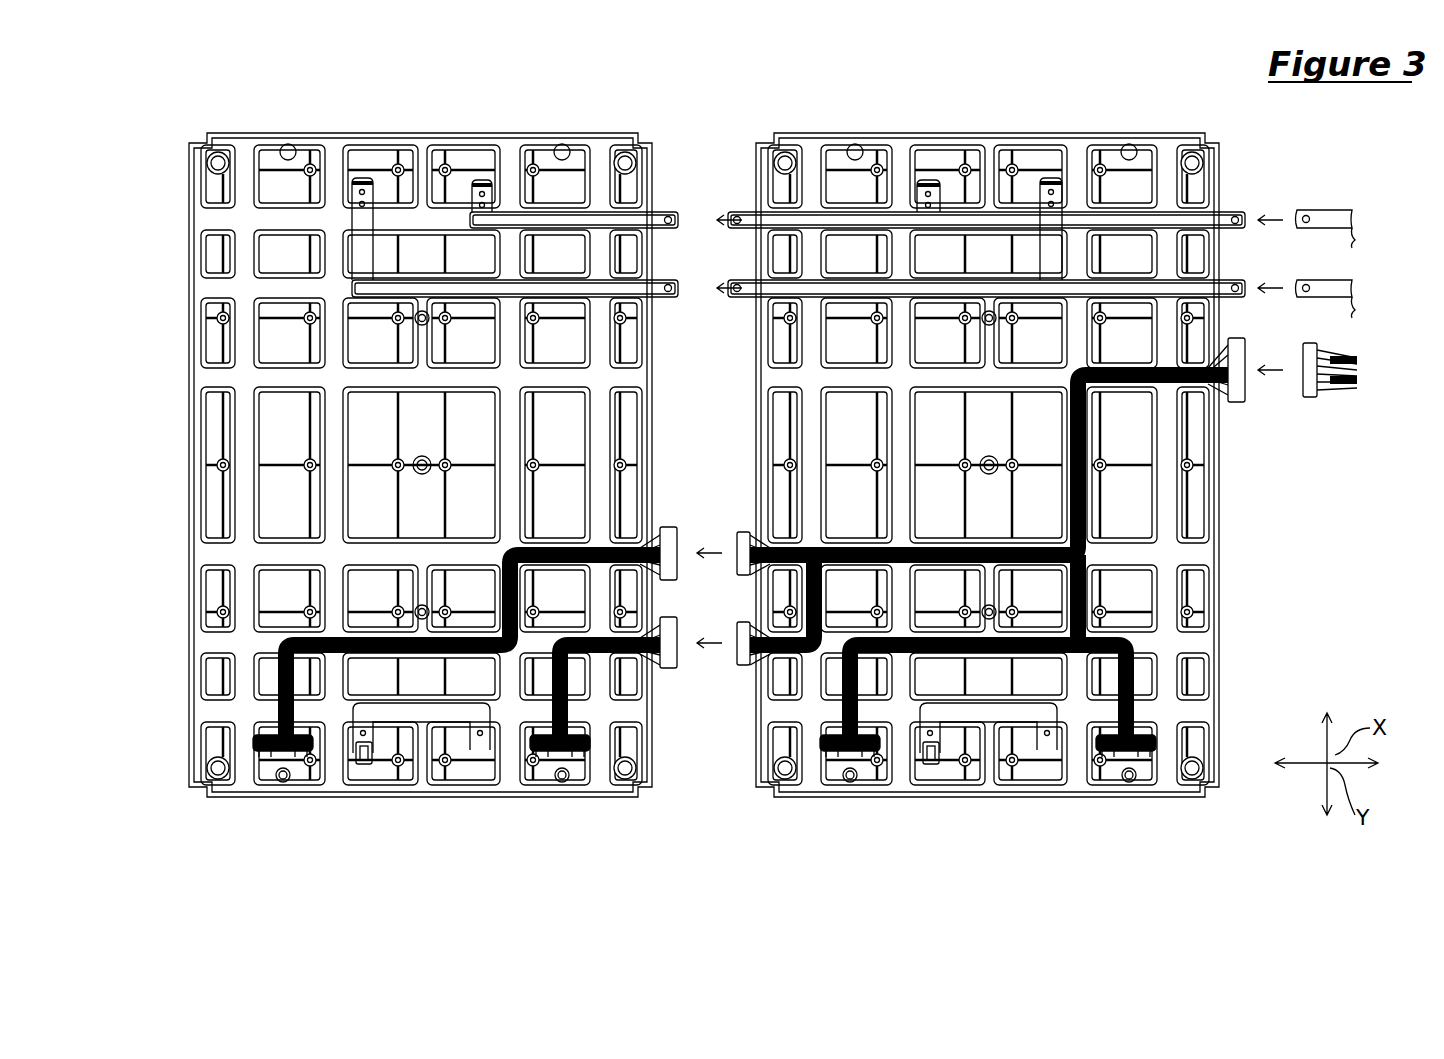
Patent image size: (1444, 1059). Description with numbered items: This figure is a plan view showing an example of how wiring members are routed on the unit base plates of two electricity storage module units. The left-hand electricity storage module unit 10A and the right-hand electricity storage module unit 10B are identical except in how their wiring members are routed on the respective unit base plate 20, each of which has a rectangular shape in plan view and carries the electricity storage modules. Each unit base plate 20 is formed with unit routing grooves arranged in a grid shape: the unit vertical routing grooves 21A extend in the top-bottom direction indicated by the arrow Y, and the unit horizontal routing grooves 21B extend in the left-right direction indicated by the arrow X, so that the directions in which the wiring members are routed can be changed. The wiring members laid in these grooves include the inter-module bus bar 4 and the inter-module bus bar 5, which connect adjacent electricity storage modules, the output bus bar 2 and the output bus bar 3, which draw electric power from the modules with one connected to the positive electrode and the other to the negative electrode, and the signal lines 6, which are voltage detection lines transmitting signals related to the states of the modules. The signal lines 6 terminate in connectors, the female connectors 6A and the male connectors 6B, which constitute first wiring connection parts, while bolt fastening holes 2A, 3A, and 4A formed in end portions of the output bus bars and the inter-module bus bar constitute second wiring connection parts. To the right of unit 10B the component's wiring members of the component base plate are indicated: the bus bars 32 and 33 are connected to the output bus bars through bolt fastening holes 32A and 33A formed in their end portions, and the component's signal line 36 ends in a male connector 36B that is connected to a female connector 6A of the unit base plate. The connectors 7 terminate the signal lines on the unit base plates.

The electricity storage module unit 10A is at (486, 110).
The electricity storage module unit 10B is at (1036, 110).
The unit base plate 20 is at (463, 792).
The unit vertical routing groove 21A is at (248, 145).
The unit horizontal routing groove 21B is at (220, 225).
The output bus bar 2 is at (1160, 212).
The bolt fastening hole 2A is at (1235, 216).
The output bus bar 3 is at (432, 280).
The bolt fastening hole 3A is at (668, 292).
The inter-module bus bar 4 is at (600, 212).
The bolt fastening hole 4A is at (668, 216).
The bus bar 32 is at (1335, 210).
The bolt fastening hole 32A is at (1306, 215).
The bus bar 33 is at (1335, 280).
The bolt fastening hole 33A is at (1306, 284).
The component's signal line 36 is at (1332, 380).
The connector 36B is at (1325, 350).
The inter-module bus bar 5 is at (412, 712).
The signal line 6 is at (628, 548).
The connector 6A is at (672, 527).
The connector 6B is at (743, 532).
The terminal connector 7 is at (298, 752).